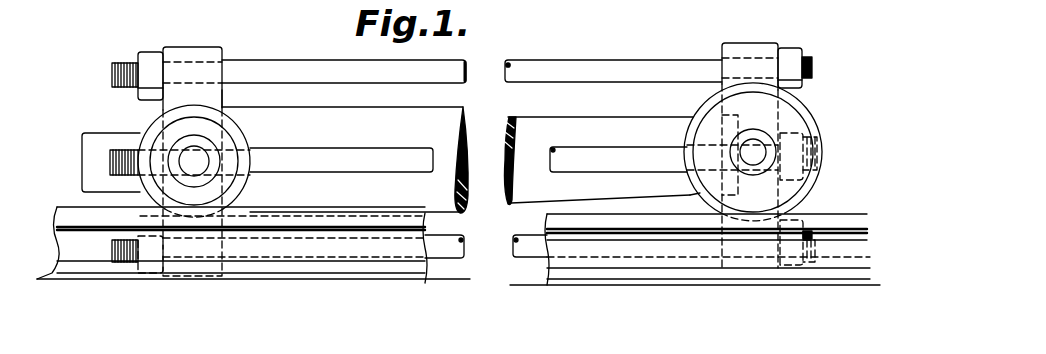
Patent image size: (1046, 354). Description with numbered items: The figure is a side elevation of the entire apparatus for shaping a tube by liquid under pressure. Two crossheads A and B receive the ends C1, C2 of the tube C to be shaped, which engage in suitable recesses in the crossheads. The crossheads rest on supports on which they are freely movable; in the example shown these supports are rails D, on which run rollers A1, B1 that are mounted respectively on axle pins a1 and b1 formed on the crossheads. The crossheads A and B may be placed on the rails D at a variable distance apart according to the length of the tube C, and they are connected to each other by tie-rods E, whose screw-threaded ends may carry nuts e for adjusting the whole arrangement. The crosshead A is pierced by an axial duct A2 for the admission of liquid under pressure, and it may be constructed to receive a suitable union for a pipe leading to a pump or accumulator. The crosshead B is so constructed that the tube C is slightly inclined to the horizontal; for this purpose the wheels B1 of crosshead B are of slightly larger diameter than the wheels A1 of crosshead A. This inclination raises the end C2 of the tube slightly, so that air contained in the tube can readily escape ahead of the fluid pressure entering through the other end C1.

The nut e is at (143, 57).
The crosshead A is at (196, 50).
The tube end C1 is at (230, 112).
The tie-rod E is at (267, 72).
The roller A1 is at (175, 130).
The axle pin a1 is at (192, 163).
The axial duct A2 is at (88, 162).
The tube C is at (523, 132).
The crosshead B is at (730, 50).
The roller B1 is at (787, 118).
The axle pin b1 is at (750, 152).
The rail D is at (68, 240).
The tube end C2 is at (687, 193).